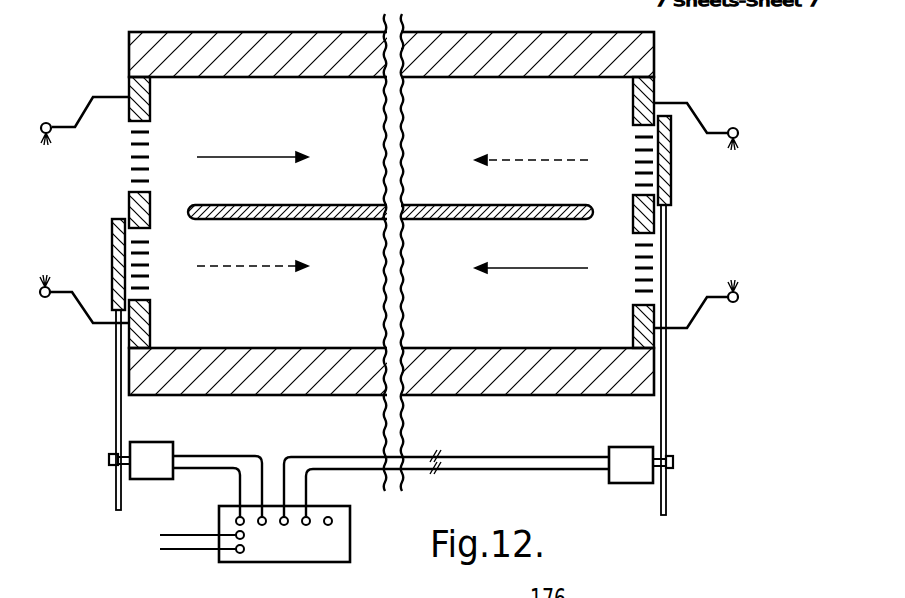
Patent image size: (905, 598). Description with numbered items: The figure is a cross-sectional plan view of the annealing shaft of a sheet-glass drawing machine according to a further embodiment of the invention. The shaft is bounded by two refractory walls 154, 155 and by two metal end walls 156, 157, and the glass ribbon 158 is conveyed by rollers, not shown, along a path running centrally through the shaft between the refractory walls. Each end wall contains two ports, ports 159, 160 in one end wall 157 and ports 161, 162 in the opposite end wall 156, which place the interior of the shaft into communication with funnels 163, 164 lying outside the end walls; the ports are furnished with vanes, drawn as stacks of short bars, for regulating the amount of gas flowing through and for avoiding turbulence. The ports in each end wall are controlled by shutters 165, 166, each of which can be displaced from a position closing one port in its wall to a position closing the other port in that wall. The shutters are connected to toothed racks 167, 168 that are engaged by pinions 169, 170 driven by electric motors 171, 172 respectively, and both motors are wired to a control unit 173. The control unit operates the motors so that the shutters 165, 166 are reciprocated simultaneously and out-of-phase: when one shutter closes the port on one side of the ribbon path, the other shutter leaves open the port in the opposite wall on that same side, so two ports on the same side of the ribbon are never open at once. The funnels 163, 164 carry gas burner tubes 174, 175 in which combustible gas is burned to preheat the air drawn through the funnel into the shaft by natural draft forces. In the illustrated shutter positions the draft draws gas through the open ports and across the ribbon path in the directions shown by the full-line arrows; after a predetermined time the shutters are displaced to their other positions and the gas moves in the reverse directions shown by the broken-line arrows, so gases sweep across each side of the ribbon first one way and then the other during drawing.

The refractory wall 154 is at (487, 52).
The refractory wall 155 is at (630, 370).
The metal end wall 156 is at (652, 88).
The metal end wall 157 is at (133, 80).
The glass ribbon 158 is at (410, 205).
The port 159 is at (140, 121).
The port 160 is at (137, 300).
The port 161 is at (634, 124).
The port 162 is at (636, 300).
The funnel 163 is at (92, 318).
The funnel 164 is at (692, 111).
The shutter 165 is at (664, 152).
The shutter 166 is at (113, 258).
The toothed rack 167 is at (666, 263).
The toothed rack 168 is at (116, 400).
The pinion 169 is at (675, 462).
The pinion 170 is at (108, 462).
The electric motor 171 is at (625, 468).
The electric motor 172 is at (185, 440).
The control unit 173 is at (317, 543).
The gas burner tube 174 is at (50, 145).
The gas burner tube 175 is at (731, 150).